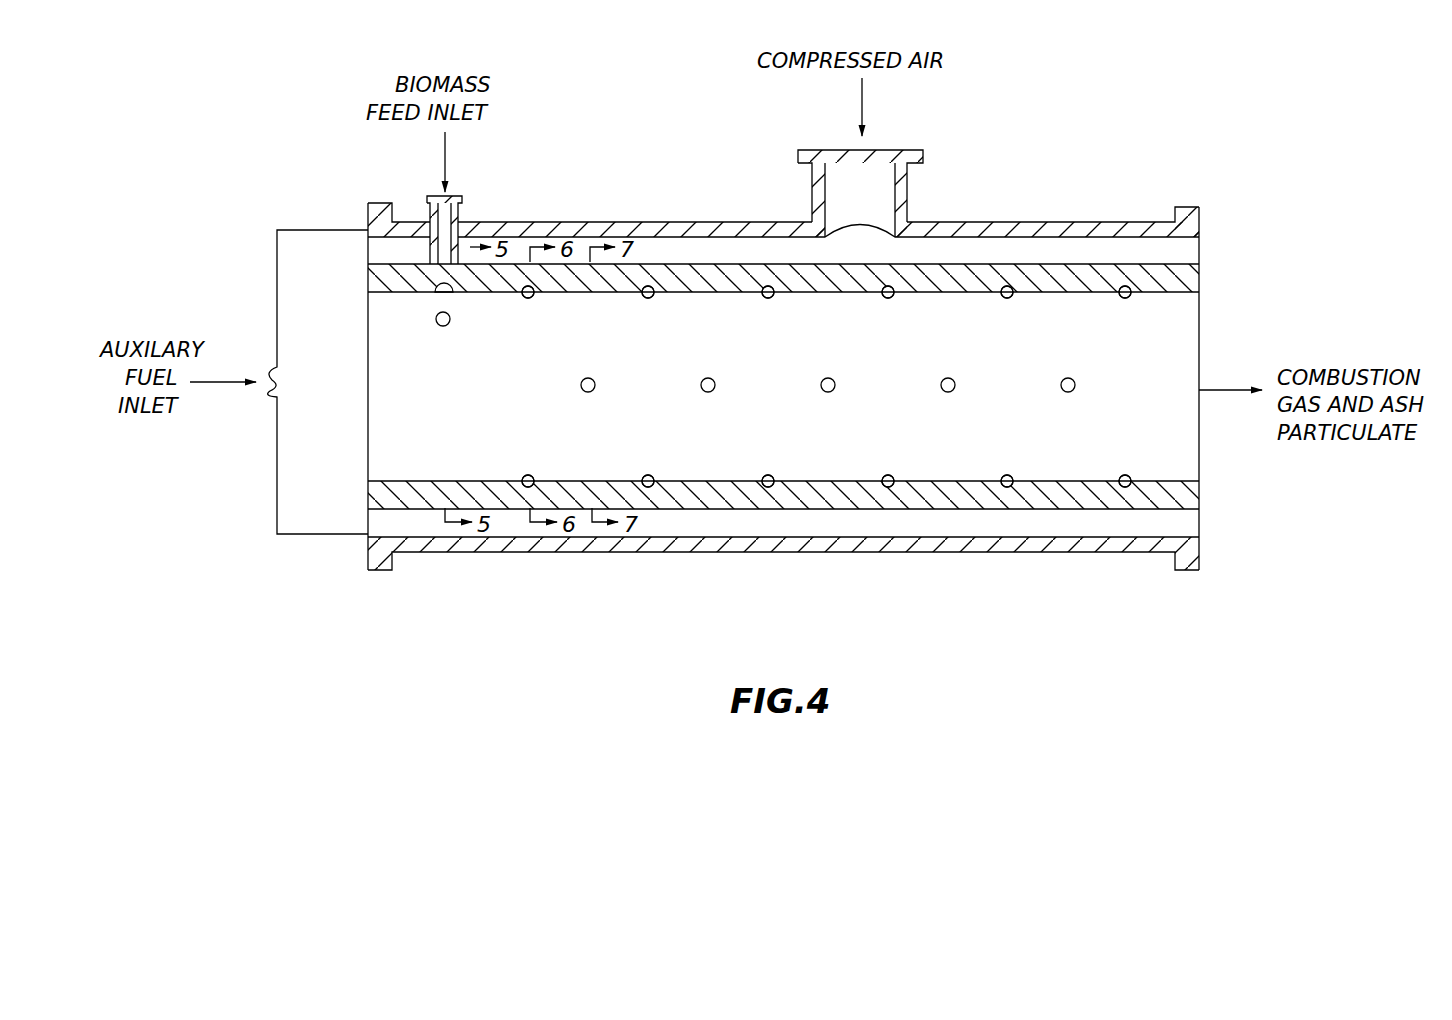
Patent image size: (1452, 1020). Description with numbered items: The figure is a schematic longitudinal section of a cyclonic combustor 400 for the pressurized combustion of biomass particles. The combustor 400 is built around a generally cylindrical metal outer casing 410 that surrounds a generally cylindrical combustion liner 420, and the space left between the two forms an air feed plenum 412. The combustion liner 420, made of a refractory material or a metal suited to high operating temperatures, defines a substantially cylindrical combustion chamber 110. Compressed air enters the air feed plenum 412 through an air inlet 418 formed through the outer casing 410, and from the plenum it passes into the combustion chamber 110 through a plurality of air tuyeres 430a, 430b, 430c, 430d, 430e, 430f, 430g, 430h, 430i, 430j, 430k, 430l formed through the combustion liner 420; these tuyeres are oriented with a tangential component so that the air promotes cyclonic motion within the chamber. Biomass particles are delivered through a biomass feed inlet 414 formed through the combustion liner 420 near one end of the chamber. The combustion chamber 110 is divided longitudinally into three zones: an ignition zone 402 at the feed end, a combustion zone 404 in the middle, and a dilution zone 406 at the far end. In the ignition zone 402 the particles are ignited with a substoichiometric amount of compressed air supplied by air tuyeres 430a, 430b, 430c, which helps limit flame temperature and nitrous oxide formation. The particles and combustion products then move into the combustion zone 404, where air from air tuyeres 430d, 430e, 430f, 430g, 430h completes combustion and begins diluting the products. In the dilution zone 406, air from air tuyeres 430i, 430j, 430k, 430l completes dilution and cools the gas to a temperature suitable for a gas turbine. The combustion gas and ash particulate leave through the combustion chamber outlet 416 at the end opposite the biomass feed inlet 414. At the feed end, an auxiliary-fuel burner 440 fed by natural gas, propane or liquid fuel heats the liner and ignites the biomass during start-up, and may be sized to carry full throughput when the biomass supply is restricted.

The cyclonic combustor 400 is at (1145, 100).
The burner 440 is at (300, 228).
The outer casing 410 is at (968, 222).
The air inlet 418 is at (910, 185).
The combustion liner 420 is at (1087, 265).
The biomass feed inlet 414 is at (463, 200).
The air feed plenum 412 is at (676, 252).
The combustion zone 404 is at (732, 335).
The dilution zone 406 is at (1066, 310).
The combustion chamber outlet 416 is at (1218, 390).
The ignition zone 402 is at (410, 430).
The combustion chamber 110 is at (742, 509).
The air tuyere 430a is at (448, 327).
The air tuyere 430b is at (528, 298).
The air tuyere 430c is at (595, 388).
The air tuyere 430d is at (648, 298).
The air tuyere 430e is at (715, 388).
The air tuyere 430f is at (768, 298).
The air tuyere 430g is at (835, 388).
The air tuyere 430h is at (888, 298).
The air tuyere 430i is at (955, 388).
The air tuyere 430j is at (1007, 298).
The air tuyere 430k is at (1075, 388).
The air tuyere 430l is at (1125, 298).